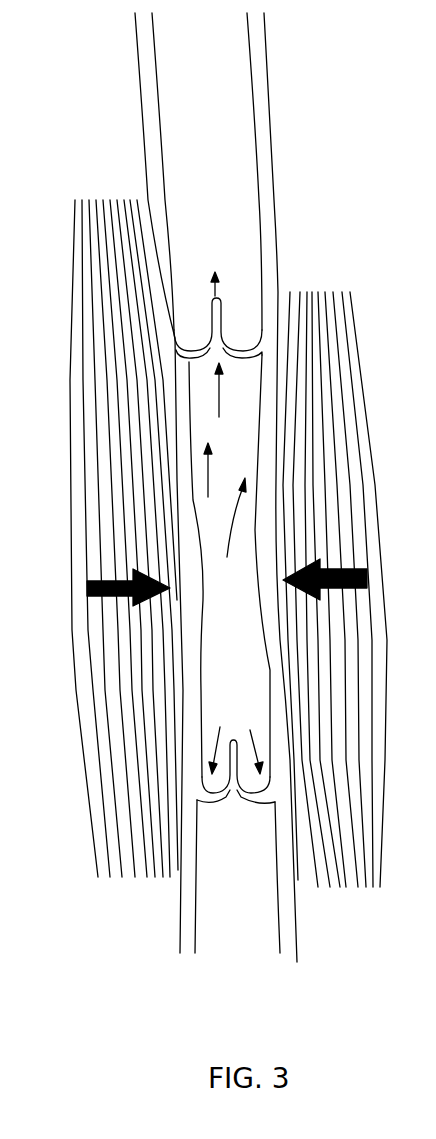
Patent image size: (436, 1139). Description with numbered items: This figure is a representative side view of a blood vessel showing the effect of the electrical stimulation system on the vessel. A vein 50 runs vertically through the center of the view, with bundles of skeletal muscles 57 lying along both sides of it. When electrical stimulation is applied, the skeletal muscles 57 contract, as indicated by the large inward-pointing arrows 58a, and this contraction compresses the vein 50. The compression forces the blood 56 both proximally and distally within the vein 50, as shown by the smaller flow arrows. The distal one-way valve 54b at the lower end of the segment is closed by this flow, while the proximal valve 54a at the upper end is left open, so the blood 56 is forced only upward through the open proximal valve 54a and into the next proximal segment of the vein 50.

The vein 50 is at (225, 86).
The proximal valve 54a is at (233, 347).
The distal one-way valve 54b is at (257, 800).
The blood 56 is at (217, 287).
The skeletal muscles 57 is at (88, 280).
The arrows 58a is at (118, 582).